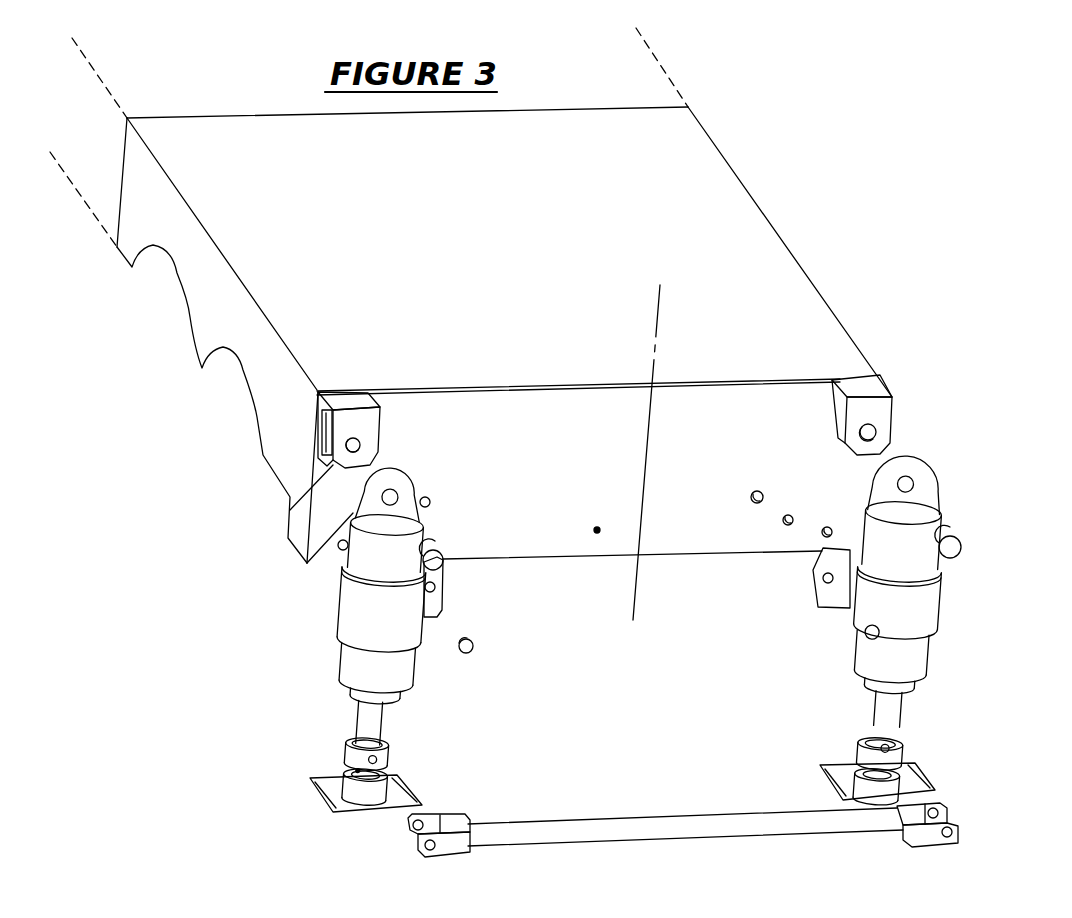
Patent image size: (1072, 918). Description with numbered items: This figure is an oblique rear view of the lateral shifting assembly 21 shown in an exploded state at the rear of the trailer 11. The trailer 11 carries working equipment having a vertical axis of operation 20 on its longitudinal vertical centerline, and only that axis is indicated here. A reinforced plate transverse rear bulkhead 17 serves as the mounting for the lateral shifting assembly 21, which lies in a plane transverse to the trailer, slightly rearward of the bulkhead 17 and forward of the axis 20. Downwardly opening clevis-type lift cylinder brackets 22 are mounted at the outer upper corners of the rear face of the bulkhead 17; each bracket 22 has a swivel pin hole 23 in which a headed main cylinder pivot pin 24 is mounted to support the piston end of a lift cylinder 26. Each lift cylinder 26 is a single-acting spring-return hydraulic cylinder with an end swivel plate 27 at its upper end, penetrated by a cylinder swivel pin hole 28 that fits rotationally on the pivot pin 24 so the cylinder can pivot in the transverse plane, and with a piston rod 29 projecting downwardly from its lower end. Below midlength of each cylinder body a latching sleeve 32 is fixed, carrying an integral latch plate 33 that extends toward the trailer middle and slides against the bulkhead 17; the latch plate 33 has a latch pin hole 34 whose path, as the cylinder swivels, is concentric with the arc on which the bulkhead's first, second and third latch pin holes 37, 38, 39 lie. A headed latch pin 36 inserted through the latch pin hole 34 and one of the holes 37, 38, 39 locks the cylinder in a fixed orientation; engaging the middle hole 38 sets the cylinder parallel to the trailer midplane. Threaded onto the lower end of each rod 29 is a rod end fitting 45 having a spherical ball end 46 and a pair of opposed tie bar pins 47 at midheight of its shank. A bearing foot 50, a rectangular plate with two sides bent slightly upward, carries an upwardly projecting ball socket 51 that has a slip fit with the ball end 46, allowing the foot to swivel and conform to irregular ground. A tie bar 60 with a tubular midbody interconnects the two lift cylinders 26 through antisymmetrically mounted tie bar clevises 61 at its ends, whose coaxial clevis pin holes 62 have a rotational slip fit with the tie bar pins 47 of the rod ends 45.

The trailer 11 is at (471, 295).
The transverse rear bulkhead 17 is at (632, 562).
The vertical axis of operation 20 is at (688, 452).
The lateral shifting assembly 21 is at (931, 630).
The lift cylinder bracket 22 is at (302, 461).
The swivel pin hole 23 is at (894, 405).
The main cylinder pivot pin 24 is at (974, 525).
The lift cylinder 26 is at (336, 674).
The end swivel plate 27 is at (346, 542).
The cylinder swivel pin hole 28 is at (371, 424).
The piston rod 29 is at (405, 719).
The latching sleeve 32 is at (339, 611).
The latch plate 33 is at (637, 625).
The latch pin hole 34 is at (813, 632).
The latch pin 36 is at (500, 660).
The first latch pin hole 37 is at (591, 464).
The second latch pin hole 38 is at (731, 564).
The third latch pin hole 39 is at (538, 583).
The rod end fitting 45 is at (319, 741).
The spherical ball end 46 is at (330, 774).
The tie bar pin 47 is at (421, 742).
The bearing foot 50 is at (444, 778).
The ball socket 51 is at (597, 793).
The tie bar 60 is at (713, 808).
The tie bar clevis 61 is at (474, 801).
The clevis pin hole 62 is at (411, 846).